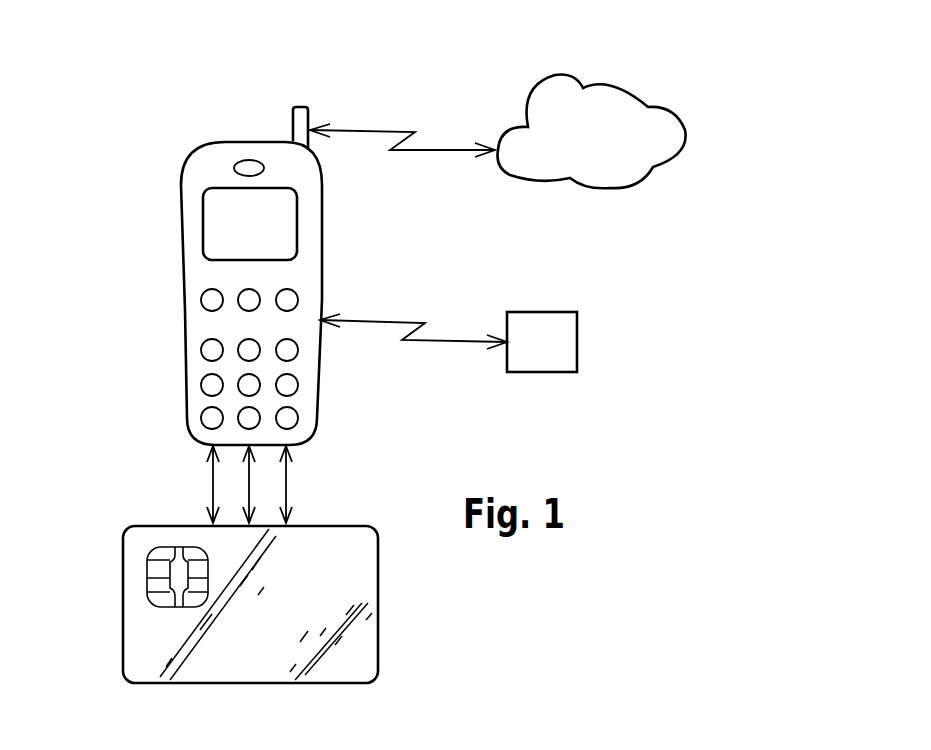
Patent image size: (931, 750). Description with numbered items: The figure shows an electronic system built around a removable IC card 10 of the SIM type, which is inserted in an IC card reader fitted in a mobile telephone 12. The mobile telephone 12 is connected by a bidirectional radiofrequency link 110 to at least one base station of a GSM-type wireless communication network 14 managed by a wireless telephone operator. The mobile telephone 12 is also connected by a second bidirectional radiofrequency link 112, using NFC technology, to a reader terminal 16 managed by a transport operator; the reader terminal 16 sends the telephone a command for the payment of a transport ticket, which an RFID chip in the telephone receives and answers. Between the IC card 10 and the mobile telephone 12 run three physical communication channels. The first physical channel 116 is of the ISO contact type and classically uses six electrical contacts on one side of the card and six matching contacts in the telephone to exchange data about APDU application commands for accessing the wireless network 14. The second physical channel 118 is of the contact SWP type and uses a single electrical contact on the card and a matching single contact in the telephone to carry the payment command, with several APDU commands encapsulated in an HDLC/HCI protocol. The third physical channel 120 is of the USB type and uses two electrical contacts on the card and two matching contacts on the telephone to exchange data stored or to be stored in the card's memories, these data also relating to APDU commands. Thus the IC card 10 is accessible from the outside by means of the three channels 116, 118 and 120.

The IC card 10 is at (130, 658).
The mobile telephone 12 is at (220, 157).
The wireless communication network 14 is at (611, 92).
The reader terminal 16 is at (538, 322).
The bidirectional radiofrequency link 110 is at (383, 132).
The bidirectional radiofrequency link 112 is at (390, 322).
The first physical channel 116 is at (213, 488).
The second physical channel 118 is at (249, 487).
The third physical channel 120 is at (286, 494).